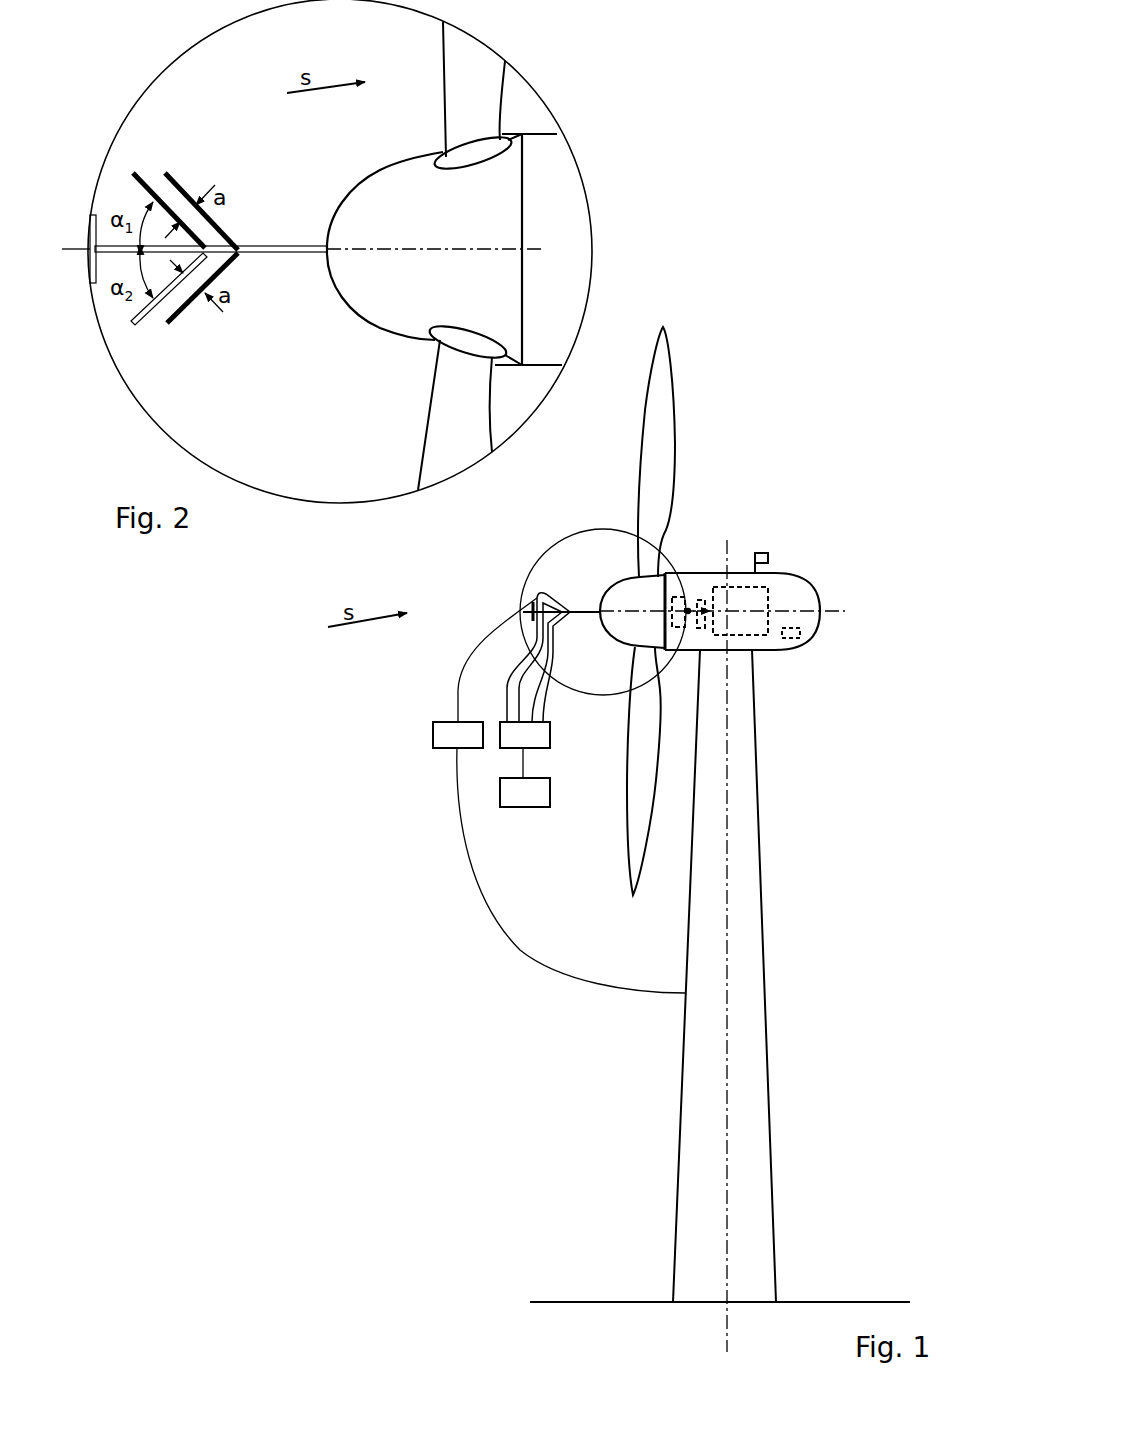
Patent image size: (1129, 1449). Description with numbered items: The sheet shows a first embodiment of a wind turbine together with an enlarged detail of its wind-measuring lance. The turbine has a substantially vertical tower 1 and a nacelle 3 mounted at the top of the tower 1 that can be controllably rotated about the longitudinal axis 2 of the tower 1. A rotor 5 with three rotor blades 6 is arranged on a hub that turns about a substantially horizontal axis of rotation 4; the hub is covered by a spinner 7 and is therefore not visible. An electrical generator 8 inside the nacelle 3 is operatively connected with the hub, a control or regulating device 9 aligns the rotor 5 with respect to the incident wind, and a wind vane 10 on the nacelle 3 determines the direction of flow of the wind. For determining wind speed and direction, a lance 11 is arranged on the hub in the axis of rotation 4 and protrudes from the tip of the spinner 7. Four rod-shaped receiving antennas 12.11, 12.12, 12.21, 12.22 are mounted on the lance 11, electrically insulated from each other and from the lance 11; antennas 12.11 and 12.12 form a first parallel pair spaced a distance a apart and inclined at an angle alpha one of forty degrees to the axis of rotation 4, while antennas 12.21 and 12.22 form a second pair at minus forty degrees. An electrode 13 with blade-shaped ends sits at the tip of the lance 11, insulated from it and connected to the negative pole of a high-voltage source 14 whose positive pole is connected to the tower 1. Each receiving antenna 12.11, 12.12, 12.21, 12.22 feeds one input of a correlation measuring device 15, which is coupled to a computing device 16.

In FIG. 1, the tower 1 is at (748, 867).
In FIG. 1, the longitudinal axis of the tower 2 is at (727, 540).
In FIG. 2, the nacelle 3 is at (562, 163).
In FIG. 1, the nacelle 3 is at (813, 593).
In FIG. 2, the axis of rotation 4 is at (448, 249).
In FIG. 1, the axis of rotation 4 is at (840, 611).
In FIG. 1, the rotor 5 is at (690, 611).
In FIG. 2, the rotor blade 6 is at (487, 72).
In FIG. 1, the rotor blade 6 is at (665, 392).
In FIG. 2, the spinner 7 is at (387, 308).
In FIG. 1, the spinner 7 is at (618, 623).
In FIG. 1, the electrical generator 8 is at (760, 590).
In FIG. 1, the control or regulating device 9 is at (802, 642).
In FIG. 1, the wind vane 10 is at (768, 553).
In FIG. 2, the lance 11 is at (275, 246).
In FIG. 1, the lance 11 is at (585, 608).
In FIG. 2, the receiving antenna 12.11 is at (141, 180).
In FIG. 2, the receiving antenna 12.12 is at (181, 190).
In FIG. 2, the receiving antenna 12.21 is at (148, 310).
In FIG. 2, the receiving antenna 12.22 is at (185, 305).
In FIG. 2, the electrode 13 is at (88, 230).
In FIG. 1, the electrode 13 is at (535, 607).
In FIG. 1, the high-voltage source 14 is at (438, 725).
In FIG. 1, the correlation measuring device 15 is at (543, 732).
In FIG. 1, the computing device 16 is at (543, 795).